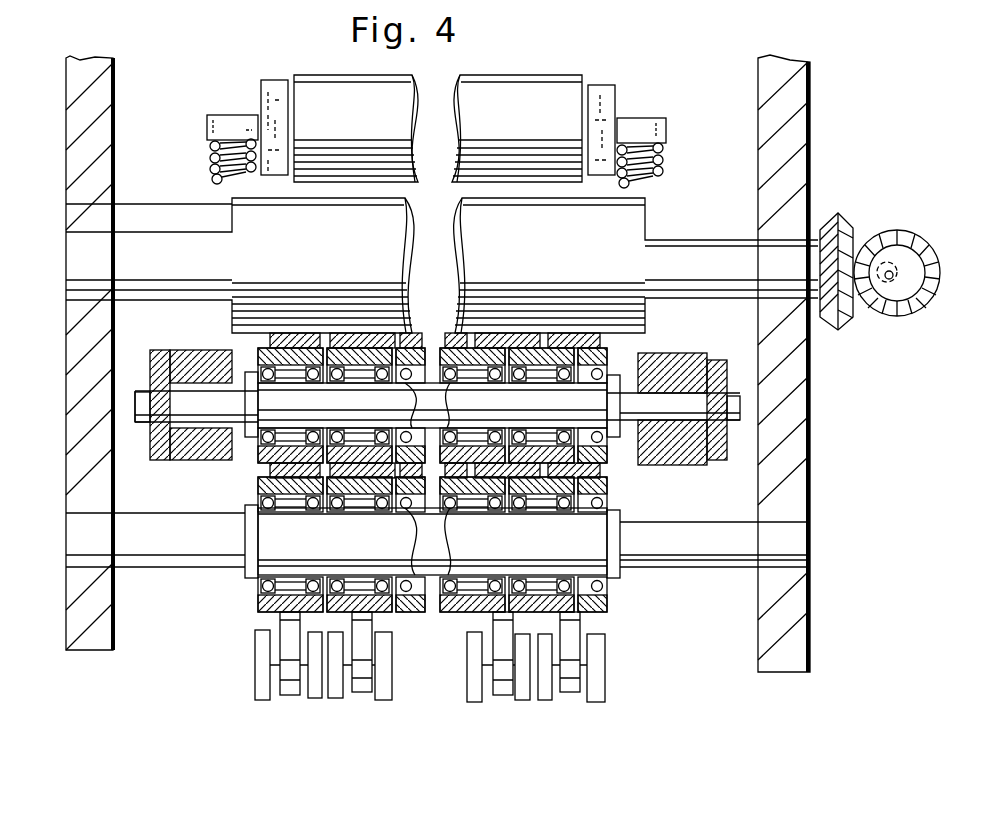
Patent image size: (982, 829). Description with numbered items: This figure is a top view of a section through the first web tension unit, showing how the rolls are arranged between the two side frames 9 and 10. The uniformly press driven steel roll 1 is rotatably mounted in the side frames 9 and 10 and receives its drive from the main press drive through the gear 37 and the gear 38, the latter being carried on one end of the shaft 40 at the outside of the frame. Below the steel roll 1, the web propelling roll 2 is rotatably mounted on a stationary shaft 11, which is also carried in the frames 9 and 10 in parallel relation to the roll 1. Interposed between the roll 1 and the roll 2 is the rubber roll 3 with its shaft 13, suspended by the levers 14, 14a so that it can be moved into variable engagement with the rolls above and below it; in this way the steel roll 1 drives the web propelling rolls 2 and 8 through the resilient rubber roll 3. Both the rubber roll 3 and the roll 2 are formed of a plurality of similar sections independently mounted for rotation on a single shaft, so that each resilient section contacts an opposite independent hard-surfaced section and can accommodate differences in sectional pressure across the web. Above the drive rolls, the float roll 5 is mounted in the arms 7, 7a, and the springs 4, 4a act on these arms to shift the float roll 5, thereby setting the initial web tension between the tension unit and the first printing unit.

The steel roll 1 is at (337, 264).
The web propelling roll 2 is at (257, 606).
The rubber roll 3 is at (610, 345).
The spring 4 is at (210, 146).
The spring 4a is at (664, 152).
The float roll 5 is at (500, 88).
The arm 7 is at (260, 90).
The arm 7a is at (616, 105).
The web propelling roll 8 is at (296, 696).
The side frame 9 is at (100, 160).
The side frame 10 is at (795, 370).
The stationary shaft 11 is at (170, 516).
The shaft 13 is at (510, 416).
The lever 14 is at (183, 352).
The lever 14a is at (690, 355).
The gear 37 is at (846, 216).
The gear 38 is at (905, 312).
The shaft 40 is at (886, 276).